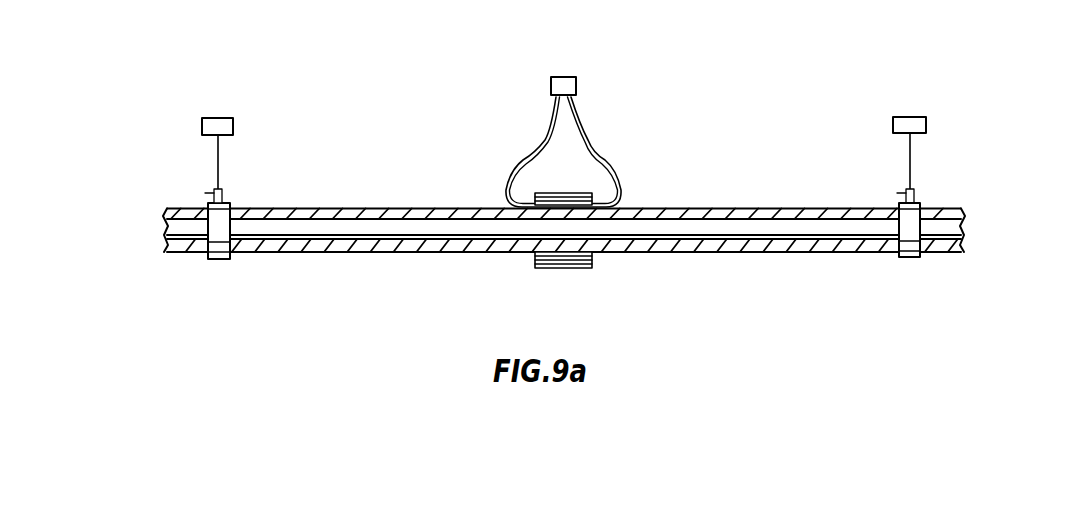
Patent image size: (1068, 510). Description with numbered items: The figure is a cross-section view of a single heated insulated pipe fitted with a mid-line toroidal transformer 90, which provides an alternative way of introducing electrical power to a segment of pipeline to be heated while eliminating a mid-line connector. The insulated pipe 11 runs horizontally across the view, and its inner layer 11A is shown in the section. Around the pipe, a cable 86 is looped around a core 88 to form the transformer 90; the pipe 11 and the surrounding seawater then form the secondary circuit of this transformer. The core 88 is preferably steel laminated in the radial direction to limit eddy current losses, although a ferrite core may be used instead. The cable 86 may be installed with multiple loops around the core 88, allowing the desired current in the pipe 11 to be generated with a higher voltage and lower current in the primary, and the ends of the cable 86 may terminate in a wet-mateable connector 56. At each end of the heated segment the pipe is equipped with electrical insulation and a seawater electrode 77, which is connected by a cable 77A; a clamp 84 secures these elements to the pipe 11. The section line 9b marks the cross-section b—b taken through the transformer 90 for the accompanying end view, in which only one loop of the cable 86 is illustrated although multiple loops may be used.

The pipe 11 is at (524, 258).
The panel core layer 11A is at (379, 246).
The connector 56 is at (576, 85).
The seawater electrode 77 is at (233, 125).
The cable 77A is at (218, 157).
The clamp 84 is at (219, 260).
The cable 86 is at (607, 151).
The core 88 is at (582, 268).
The toroidal transformer 90 is at (530, 280).
The section line 9b is at (580, 177).